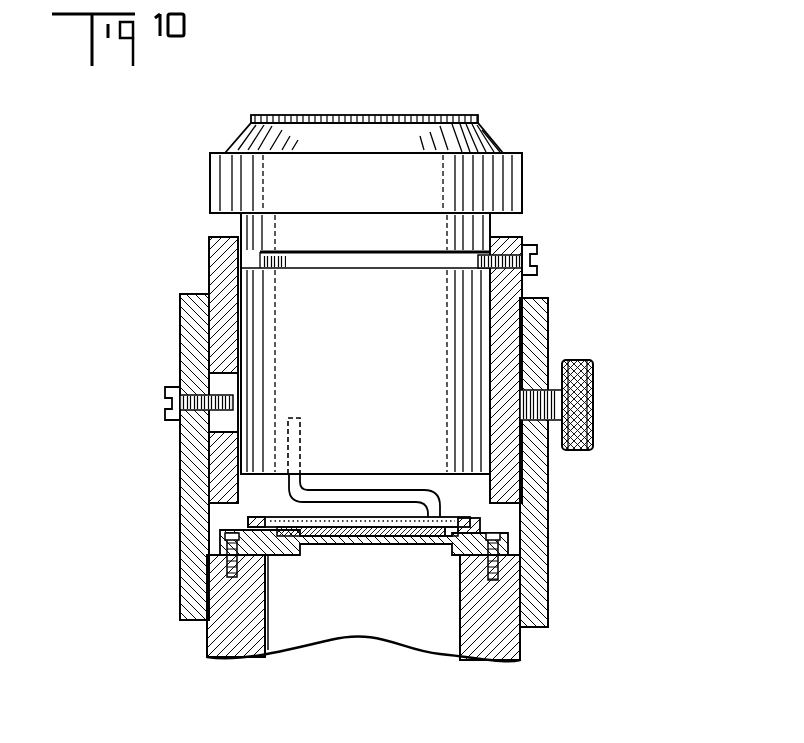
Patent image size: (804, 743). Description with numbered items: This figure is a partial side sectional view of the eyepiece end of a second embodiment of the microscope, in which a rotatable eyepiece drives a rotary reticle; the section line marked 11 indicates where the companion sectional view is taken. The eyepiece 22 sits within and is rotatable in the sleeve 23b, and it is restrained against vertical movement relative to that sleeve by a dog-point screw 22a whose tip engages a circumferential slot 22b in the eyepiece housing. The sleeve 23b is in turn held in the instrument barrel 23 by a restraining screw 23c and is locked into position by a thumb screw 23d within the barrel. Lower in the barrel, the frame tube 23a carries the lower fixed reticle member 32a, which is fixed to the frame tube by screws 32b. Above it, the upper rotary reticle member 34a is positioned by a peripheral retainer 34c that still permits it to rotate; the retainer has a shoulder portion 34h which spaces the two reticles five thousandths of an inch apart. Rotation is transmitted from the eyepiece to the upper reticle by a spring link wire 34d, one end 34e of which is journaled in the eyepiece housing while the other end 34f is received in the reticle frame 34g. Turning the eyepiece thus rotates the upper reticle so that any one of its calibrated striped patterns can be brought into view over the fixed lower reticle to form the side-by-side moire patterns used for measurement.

The eyepiece 22 is at (480, 132).
The dog-point screw 22a is at (537, 250).
The circumferential slot 22b is at (342, 262).
The barrel member 23 is at (537, 325).
The frame tube 23a is at (233, 637).
The sleeve 23b is at (223, 272).
The restraining screw 23c is at (168, 392).
The thumb screw 23d is at (583, 396).
The lower fixed reticle member 32a is at (313, 539).
The screws 32b is at (228, 562).
The rotary reticle member 34a is at (298, 517).
The peripheral retainer 34c is at (480, 524).
The spring link wire 34d is at (348, 496).
The end of spring link wire 34e is at (301, 433).
The end of spring link wire 34f is at (437, 509).
The reticle frame 34g is at (388, 524).
The shoulder portion 34h is at (454, 530).
The section line for FIG. 11 is at (82, 455).